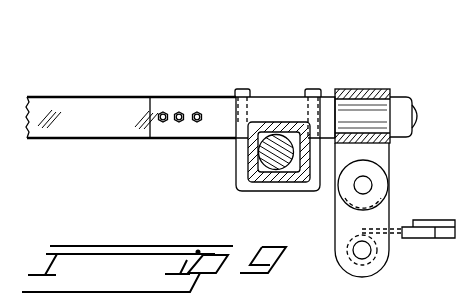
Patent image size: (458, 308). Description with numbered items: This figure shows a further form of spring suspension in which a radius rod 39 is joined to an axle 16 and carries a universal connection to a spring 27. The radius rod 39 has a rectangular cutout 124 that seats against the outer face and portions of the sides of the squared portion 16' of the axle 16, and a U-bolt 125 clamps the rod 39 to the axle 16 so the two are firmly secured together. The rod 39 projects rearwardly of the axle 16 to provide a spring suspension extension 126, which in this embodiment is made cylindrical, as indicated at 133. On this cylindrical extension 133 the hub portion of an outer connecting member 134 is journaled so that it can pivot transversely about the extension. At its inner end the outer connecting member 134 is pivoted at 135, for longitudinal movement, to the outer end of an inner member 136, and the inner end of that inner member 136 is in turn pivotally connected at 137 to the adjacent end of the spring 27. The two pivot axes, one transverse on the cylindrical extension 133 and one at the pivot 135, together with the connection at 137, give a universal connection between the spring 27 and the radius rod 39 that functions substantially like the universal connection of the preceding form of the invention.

The radius rod 39 is at (152, 108).
The axle 16 is at (257, 158).
The squared portion of axle 16' is at (284, 157).
The rectangular cutout 124 is at (252, 122).
The U-bolt 125 is at (313, 89).
The spring suspension extension 126 is at (366, 108).
The cylindrical extension 133 is at (404, 110).
The inner member 136 is at (414, 110).
The outer connecting member 134 is at (380, 156).
The pivot 135 is at (363, 185).
The pivotal connection 137 is at (360, 252).
The spring 27 is at (428, 240).